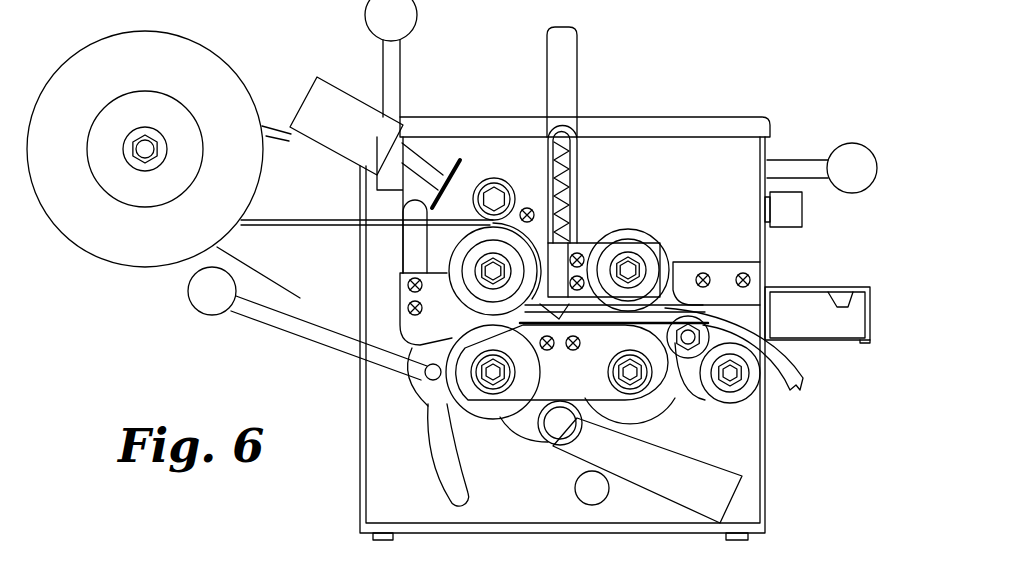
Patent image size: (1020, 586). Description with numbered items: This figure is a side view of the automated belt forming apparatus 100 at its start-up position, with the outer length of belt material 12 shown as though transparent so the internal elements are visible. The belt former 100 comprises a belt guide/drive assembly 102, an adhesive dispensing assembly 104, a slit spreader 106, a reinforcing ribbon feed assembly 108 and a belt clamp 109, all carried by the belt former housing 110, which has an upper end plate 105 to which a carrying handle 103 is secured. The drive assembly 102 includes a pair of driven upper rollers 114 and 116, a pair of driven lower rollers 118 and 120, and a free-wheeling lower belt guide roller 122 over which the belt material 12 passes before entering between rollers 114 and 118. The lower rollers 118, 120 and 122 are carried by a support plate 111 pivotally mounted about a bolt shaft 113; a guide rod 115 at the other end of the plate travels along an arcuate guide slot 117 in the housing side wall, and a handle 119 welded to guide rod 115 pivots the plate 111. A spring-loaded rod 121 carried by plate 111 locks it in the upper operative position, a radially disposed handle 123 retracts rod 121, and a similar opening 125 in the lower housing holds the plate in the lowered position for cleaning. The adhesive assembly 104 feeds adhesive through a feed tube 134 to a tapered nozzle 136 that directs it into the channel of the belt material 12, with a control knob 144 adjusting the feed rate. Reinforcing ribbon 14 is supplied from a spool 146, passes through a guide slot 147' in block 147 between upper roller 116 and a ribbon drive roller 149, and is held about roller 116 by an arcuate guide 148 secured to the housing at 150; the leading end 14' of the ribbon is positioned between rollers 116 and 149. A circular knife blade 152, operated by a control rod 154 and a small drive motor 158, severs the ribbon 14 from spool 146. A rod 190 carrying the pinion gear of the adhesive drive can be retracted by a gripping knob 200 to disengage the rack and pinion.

The belt forming apparatus 100 is at (610, 280).
The belt guide/drive assembly 102 is at (642, 210).
The carrying handle 103 is at (573, 57).
The adhesive dispensing assembly 104 is at (587, 153).
The upper end plate 105 is at (705, 115).
The slit spreader 106 is at (672, 310).
The reinforcing ribbon feed assembly 108 is at (270, 95).
The belt clamp 109 is at (830, 287).
The belt former housing 110 is at (767, 467).
The support plate 111 is at (528, 437).
The bolt shaft 113 is at (732, 375).
The upper roller 114 is at (657, 240).
The guide rod 115 is at (425, 378).
The upper roller 116 is at (467, 240).
The arcuate guide slot 117 is at (435, 452).
The lower roller 118 is at (642, 431).
The handle 119 is at (323, 333).
The lower roller 120 is at (483, 413).
The spring-loaded rod 121 is at (555, 433).
The lower belt guide roller 122 is at (686, 352).
The handle 123 is at (677, 481).
The opening 125 is at (598, 503).
The feed tube 134 is at (573, 187).
The tapered nozzle 136 is at (560, 319).
The control knob 144 is at (800, 215).
The spool 146 is at (206, 44).
The block 147 is at (380, 332).
The guide slot 147' is at (357, 238).
The arcuate guide 148 is at (575, 227).
The ribbon drive roller 149 is at (486, 180).
The securing point 150 is at (528, 208).
The circular knife blade 152 is at (455, 165).
The control rod 154 is at (397, 57).
The drive motor 158 is at (350, 105).
The rod 190 is at (798, 163).
The gripping knob 200 is at (853, 155).
The outer length of belt material 12 is at (788, 362).
The reinforcing ribbon 14 is at (379, 228).
The leading end of the reinforcing ribbon 14' is at (611, 351).